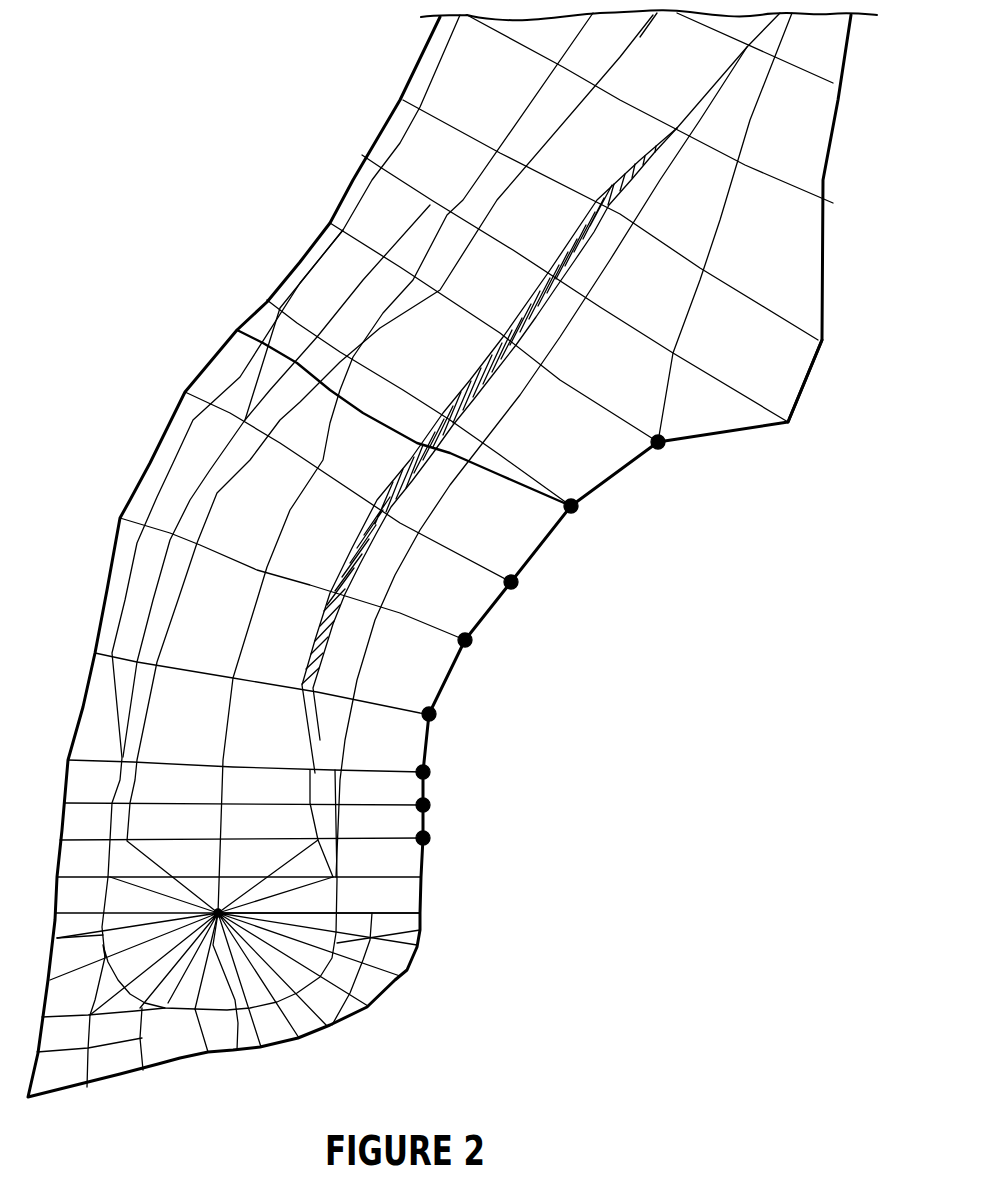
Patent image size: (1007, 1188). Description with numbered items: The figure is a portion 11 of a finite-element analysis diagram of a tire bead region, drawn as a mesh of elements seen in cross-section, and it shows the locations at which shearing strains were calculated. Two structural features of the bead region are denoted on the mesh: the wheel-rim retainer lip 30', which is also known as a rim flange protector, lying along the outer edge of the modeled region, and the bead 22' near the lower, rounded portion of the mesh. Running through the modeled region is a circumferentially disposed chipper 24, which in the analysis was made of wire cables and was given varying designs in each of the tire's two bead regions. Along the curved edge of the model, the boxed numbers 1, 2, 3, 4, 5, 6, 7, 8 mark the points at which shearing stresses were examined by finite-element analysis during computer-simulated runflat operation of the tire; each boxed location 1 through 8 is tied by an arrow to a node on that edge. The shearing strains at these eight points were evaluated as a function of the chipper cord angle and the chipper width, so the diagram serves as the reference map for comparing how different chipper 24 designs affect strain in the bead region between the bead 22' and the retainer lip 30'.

The portion of finite-element analysis diagram 11 is at (858, 170).
The wheel-rim retainer lip 30' is at (840, 381).
The chipper 24 is at (237, 330).
The bead 22' is at (235, 980).
The boxed location 1 is at (670, 458).
The boxed location 2 is at (585, 519).
The boxed location 3 is at (527, 592).
The boxed location 4 is at (481, 650).
The boxed location 5 is at (443, 726).
The boxed location 6 is at (437, 779).
The boxed location 7 is at (437, 811).
The boxed location 8 is at (437, 843).